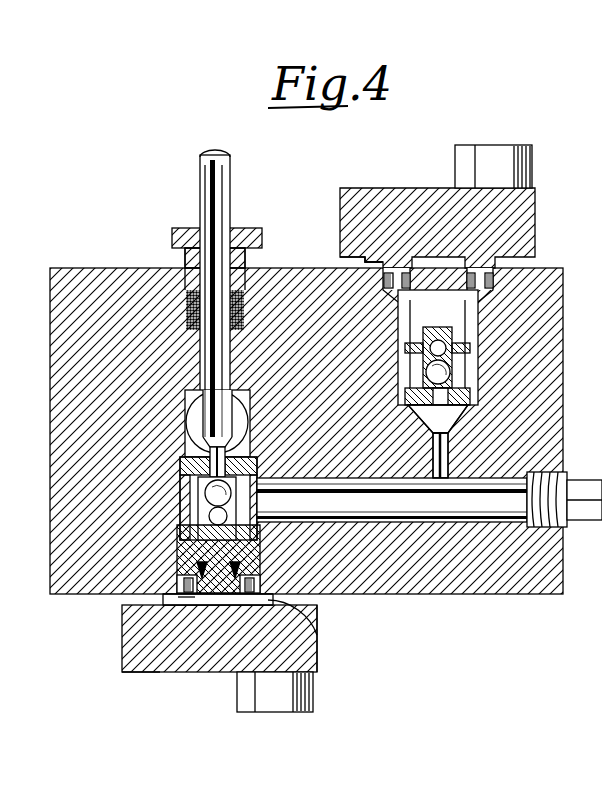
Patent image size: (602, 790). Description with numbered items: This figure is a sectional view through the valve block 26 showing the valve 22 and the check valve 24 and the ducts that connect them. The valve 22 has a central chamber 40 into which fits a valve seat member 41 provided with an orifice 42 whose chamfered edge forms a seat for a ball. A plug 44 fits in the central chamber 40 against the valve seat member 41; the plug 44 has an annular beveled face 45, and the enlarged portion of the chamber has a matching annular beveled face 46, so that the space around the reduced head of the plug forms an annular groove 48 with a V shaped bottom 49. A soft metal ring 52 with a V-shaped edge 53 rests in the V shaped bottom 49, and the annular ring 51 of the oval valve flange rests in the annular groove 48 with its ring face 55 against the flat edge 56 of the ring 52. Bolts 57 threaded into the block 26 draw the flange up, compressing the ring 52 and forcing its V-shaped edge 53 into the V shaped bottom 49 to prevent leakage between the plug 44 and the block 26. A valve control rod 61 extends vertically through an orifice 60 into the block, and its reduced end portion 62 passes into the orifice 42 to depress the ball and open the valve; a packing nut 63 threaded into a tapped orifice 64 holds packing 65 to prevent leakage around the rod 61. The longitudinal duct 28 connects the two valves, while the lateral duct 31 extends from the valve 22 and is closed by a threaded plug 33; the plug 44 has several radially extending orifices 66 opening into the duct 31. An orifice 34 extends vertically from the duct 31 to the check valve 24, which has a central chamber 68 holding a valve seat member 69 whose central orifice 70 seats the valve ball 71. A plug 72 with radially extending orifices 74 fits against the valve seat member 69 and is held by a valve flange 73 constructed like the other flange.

The valve block 26 is at (78, 278).
The valve flange 73 is at (533, 216).
The check valve 24 is at (540, 272).
The radially extending orifices 74 is at (562, 280).
The valve ball 71 is at (470, 330).
The central orifice 70 is at (462, 366).
The central chamber 68 is at (465, 350).
The valve seat member 69 is at (478, 392).
The plug 72 is at (397, 318).
The packing nut 63 is at (176, 229).
The tapped orifice 64 is at (185, 288).
The packing 65 is at (185, 313).
The orifice 60 is at (225, 340).
The valve control rod 61 is at (225, 385).
The valve 22 is at (260, 322).
The orifice 42 is at (232, 462).
The valve seat member 41 is at (200, 483).
The reduced end portion 62 is at (205, 495).
The central chamber 40 is at (209, 520).
The longitudinal duct 28 is at (250, 540).
The plug 44 is at (200, 595).
The ring 52 is at (165, 600).
The annular beveled face 45 is at (125, 628).
The V-shaped edge 53 is at (180, 572).
The V shaped bottom 49 is at (177, 590).
The flat edge 56 is at (178, 597).
The ring face 55 is at (190, 597).
The bolts 57 is at (302, 713).
The duct 31 is at (492, 510).
The radially extending orifices 66 is at (262, 512).
The orifice 34 is at (438, 480).
The plug 33 is at (583, 485).
The annular beveled face 46 is at (265, 565).
The annular groove 48 is at (317, 635).
The annular ring 51 is at (318, 655).